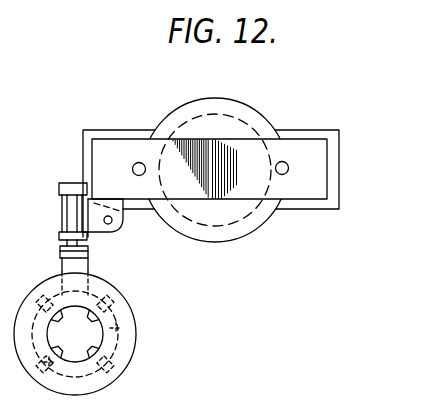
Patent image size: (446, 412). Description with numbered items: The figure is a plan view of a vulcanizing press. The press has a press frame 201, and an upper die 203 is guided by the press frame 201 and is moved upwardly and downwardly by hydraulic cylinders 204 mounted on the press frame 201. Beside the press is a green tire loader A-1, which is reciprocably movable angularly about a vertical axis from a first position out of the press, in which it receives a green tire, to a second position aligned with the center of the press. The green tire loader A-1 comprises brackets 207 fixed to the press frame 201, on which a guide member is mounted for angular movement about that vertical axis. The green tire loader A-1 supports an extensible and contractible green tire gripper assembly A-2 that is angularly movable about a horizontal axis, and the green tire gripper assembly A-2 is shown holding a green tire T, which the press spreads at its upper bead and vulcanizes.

The press frame 201 is at (339, 161).
The upper die 203 is at (242, 114).
The hydraulic cylinders 204 is at (301, 161).
The brackets 207 is at (123, 228).
The green tire loader A-1 is at (62, 183).
The green tire gripper assembly A-2 is at (127, 325).
The green tire T is at (134, 342).